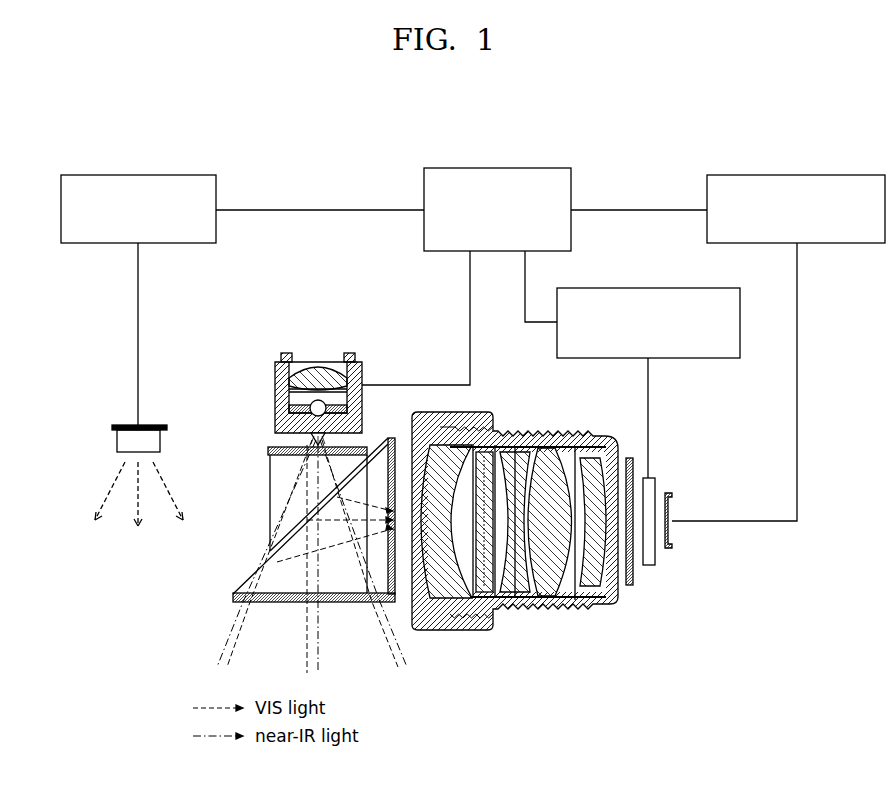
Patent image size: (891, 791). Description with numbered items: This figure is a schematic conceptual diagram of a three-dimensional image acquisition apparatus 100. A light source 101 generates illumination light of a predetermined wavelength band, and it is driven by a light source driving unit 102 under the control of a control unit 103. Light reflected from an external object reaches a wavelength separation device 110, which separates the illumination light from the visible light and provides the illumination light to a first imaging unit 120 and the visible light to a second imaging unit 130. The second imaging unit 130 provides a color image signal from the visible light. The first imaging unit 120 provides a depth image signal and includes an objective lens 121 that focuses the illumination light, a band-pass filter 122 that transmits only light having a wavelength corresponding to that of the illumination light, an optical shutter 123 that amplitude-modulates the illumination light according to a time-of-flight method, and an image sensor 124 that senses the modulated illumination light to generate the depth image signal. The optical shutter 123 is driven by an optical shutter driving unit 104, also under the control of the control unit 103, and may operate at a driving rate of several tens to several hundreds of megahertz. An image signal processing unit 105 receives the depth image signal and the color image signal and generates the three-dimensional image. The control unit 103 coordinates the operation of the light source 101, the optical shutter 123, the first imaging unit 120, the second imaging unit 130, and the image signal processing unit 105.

The 3D image acquisition apparatus 100 is at (441, 723).
The light source 101 is at (112, 427).
The light source driving unit 102 is at (143, 175).
The control unit 103 is at (517, 168).
The optical shutter driving unit 104 is at (658, 288).
The image signal processing unit 105 is at (803, 175).
The wavelength separation device 110 is at (223, 600).
The first imaging unit 120 is at (579, 558).
The objective lens 121 is at (523, 612).
The band-pass filter 122 is at (630, 585).
The optical shutter 123 is at (650, 565).
The image sensor 124 is at (672, 537).
The second imaging unit 130 is at (275, 389).